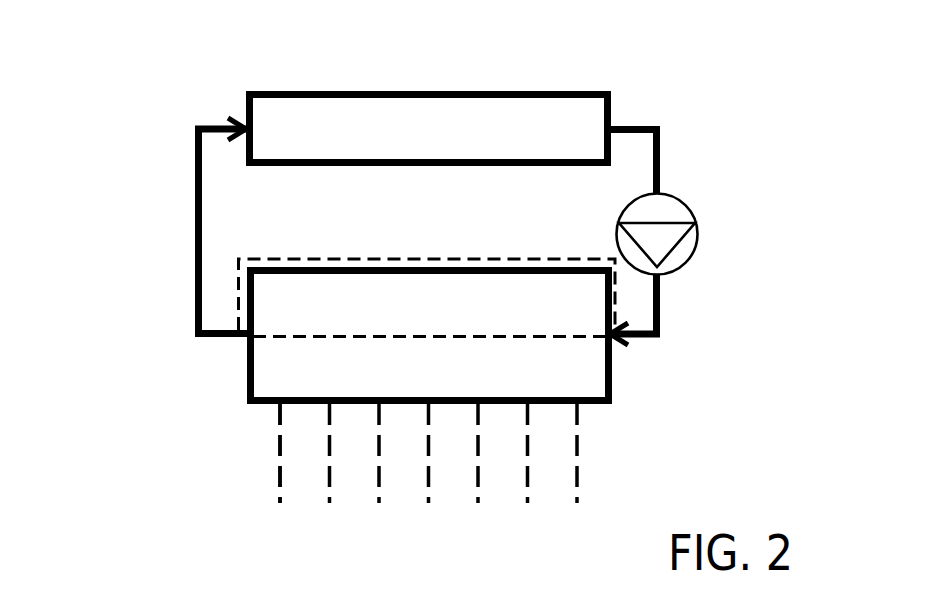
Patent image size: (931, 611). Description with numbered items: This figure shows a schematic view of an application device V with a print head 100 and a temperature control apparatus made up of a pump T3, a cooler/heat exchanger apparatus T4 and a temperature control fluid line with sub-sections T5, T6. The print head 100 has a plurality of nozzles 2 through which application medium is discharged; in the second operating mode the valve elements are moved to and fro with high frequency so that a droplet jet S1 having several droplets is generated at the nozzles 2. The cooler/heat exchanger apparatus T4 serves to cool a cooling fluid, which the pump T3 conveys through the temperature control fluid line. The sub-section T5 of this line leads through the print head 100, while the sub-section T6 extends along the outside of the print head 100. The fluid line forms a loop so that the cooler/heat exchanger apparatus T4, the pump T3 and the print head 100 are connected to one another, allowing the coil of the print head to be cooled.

The cooler/heat exchanger apparatus T4 is at (403, 110).
The pump T3 is at (680, 205).
The sub-section of temperature control fluid line T6 is at (238, 290).
The sub-section of temperature control fluid line T5 is at (290, 336).
The print head 100 is at (450, 320).
The nozzle 2 is at (275, 408).
The droplet jet S1 is at (578, 442).
The application device V is at (168, 147).